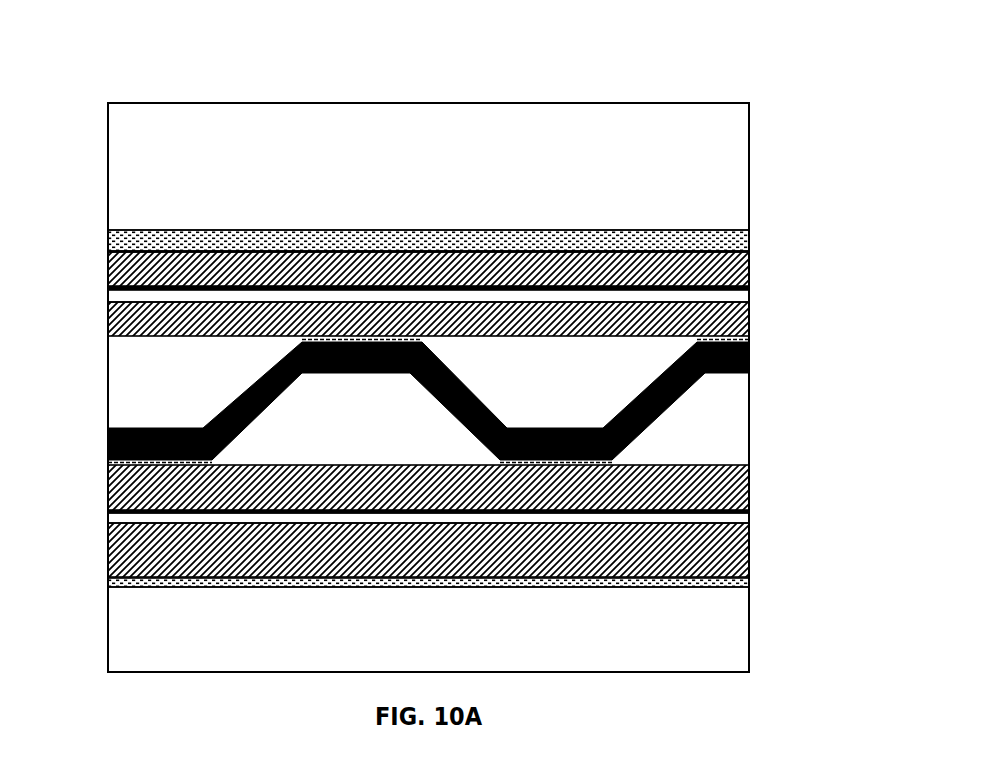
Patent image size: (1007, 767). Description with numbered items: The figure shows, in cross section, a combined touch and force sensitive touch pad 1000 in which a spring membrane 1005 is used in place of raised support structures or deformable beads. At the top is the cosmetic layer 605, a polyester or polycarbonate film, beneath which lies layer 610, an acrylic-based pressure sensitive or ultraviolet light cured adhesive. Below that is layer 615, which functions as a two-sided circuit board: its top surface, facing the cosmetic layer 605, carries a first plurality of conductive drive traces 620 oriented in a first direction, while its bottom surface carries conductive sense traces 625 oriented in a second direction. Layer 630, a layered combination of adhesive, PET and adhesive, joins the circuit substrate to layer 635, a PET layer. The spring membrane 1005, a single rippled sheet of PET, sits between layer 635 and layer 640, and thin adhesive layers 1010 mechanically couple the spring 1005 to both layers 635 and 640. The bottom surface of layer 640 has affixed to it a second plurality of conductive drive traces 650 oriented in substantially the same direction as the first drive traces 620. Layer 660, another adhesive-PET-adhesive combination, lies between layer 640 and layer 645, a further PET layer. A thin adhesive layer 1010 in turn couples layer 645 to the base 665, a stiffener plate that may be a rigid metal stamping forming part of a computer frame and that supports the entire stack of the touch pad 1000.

The touch pad 1000 is at (618, 87).
The cosmetic layer 605 is at (553, 179).
The adhesive layer 610 is at (752, 235).
The circuit substrate layer 615 is at (749, 268).
The conductive drive traces 620 is at (108, 252).
The conductive sense traces 625 is at (108, 288).
The adhesive-PET-adhesive layer 630 is at (749, 295).
The PET layer 635 is at (108, 318).
The PET layer 640 is at (108, 490).
The PET layer 645 is at (108, 553).
The second conductive drive traces 650 is at (750, 508).
The adhesive-PET-adhesive layer 660 is at (750, 517).
The base 665 is at (485, 642).
The spring membrane 1005 is at (749, 355).
The thin adhesive layers 1010 is at (302, 340).